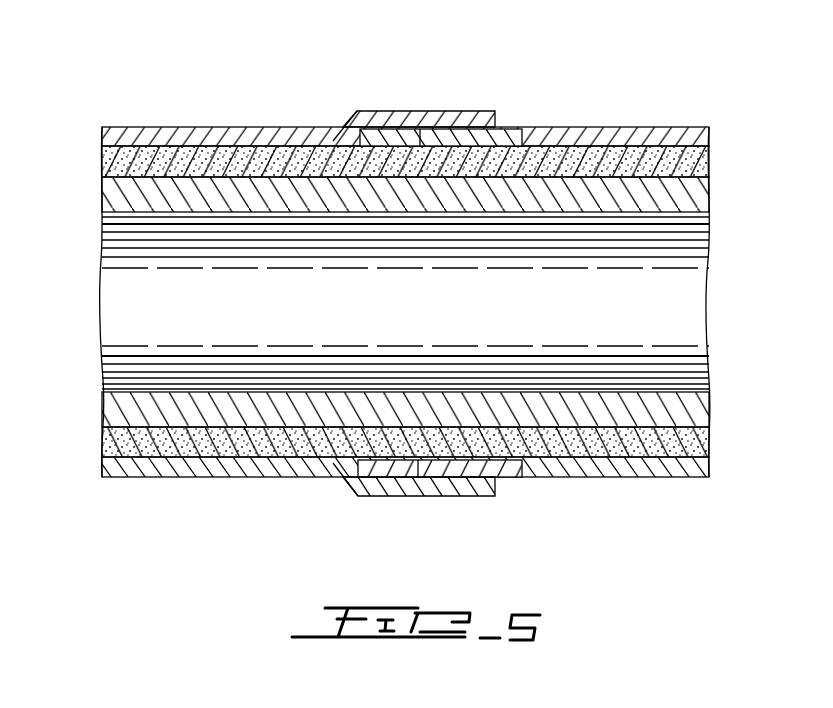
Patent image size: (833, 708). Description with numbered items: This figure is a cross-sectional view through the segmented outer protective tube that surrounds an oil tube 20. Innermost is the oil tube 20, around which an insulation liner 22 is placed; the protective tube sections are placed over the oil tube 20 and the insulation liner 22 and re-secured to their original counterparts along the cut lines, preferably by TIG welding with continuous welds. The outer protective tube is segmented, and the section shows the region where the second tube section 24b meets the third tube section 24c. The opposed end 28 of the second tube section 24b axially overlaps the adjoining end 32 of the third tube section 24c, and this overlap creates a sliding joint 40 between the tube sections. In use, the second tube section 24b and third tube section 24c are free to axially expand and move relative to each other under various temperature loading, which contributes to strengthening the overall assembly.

The oil tube 20 is at (710, 412).
The insulation liner 22 is at (710, 447).
The second tube section 24b is at (95, 473).
The third tube section 24c is at (710, 478).
The opposed end of second tube section 28 is at (482, 115).
The adjoining end of third tube section 32 is at (391, 118).
The sliding joint 40 is at (386, 503).